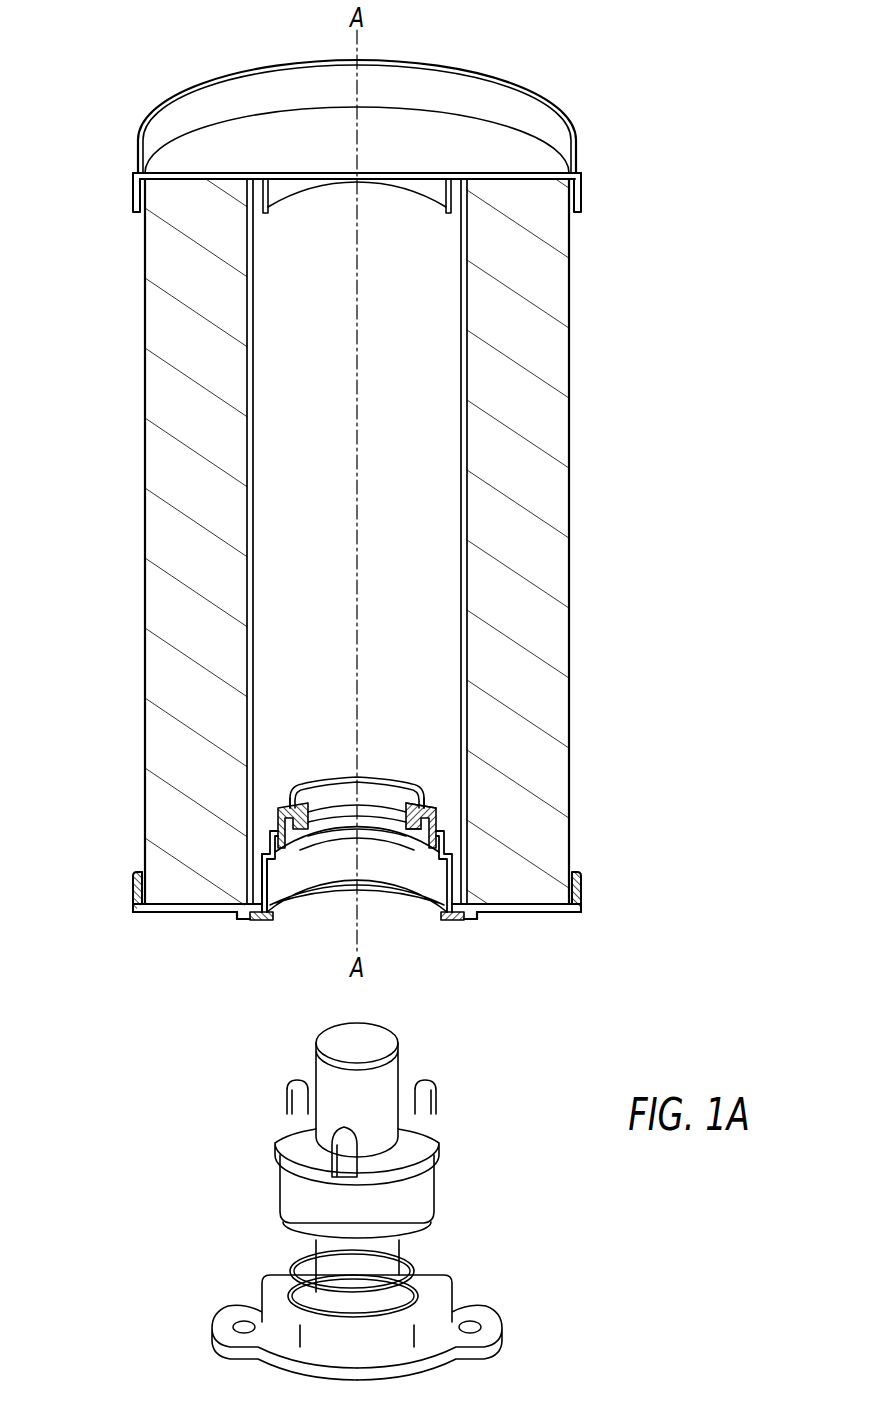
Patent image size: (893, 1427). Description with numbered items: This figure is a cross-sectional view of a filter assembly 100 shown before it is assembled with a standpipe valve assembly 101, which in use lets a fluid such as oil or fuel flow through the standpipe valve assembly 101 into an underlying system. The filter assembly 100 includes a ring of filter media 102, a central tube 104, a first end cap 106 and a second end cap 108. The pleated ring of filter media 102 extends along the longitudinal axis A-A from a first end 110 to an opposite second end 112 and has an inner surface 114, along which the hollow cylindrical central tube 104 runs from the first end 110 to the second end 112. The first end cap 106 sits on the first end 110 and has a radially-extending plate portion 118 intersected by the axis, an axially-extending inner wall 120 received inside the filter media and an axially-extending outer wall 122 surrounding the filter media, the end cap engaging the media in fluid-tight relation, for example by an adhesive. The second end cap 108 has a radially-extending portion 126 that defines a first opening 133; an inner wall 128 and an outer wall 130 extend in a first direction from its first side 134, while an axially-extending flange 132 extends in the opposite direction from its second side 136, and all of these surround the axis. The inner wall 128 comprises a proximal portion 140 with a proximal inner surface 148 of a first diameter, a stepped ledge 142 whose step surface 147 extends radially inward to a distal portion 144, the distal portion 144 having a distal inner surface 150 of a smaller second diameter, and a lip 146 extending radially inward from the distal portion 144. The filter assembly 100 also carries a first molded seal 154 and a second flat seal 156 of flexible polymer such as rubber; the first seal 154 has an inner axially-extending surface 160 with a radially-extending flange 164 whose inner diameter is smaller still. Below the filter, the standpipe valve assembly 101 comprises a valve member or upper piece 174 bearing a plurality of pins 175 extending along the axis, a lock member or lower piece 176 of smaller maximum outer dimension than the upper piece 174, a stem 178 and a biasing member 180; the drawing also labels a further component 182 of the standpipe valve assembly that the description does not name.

The filter assembly 100 is at (708, 101).
The standpipe valve assembly 101 is at (177, 1196).
The ring of filter media 102 is at (558, 306).
The central tube 104 is at (464, 407).
The first end cap 106 is at (228, 78).
The second end cap 108 is at (132, 907).
The first end 110 is at (203, 173).
The second end 112 is at (505, 913).
The inner surface 114 is at (256, 320).
The radially-extending plate portion 118 is at (455, 133).
The axially-extending inner wall 120 is at (277, 188).
The axially-extending outer wall 122 is at (134, 190).
The radially-extending portion 126 is at (259, 912).
The axially-extending inner wall 128 is at (286, 888).
The axially-extending outer wall 130 is at (582, 893).
The axially-extending flange 132 is at (243, 923).
The first opening 133 is at (432, 890).
The first side 134 is at (158, 898).
The second side 136 is at (152, 915).
The proximal portion 140 is at (427, 876).
The stepped ledge 142 is at (444, 840).
The distal portion 144 is at (437, 820).
The lip 146 is at (287, 824).
The step surface 147 is at (265, 872).
The proximal inner surface 148 is at (398, 871).
The distal inner surface 150 is at (343, 827).
The first molded seal 154 is at (424, 808).
The second flat seal 156 is at (455, 922).
The inner axially-extending surface 160 is at (342, 786).
The radially-extending flange 164 is at (377, 798).
The upper piece 174 is at (290, 1137).
The pins 175 is at (295, 1080).
The lower piece 176 is at (418, 1200).
The stem 178 is at (335, 1247).
The biasing member 180 is at (424, 1256).
The plunger 182 is at (372, 1043).